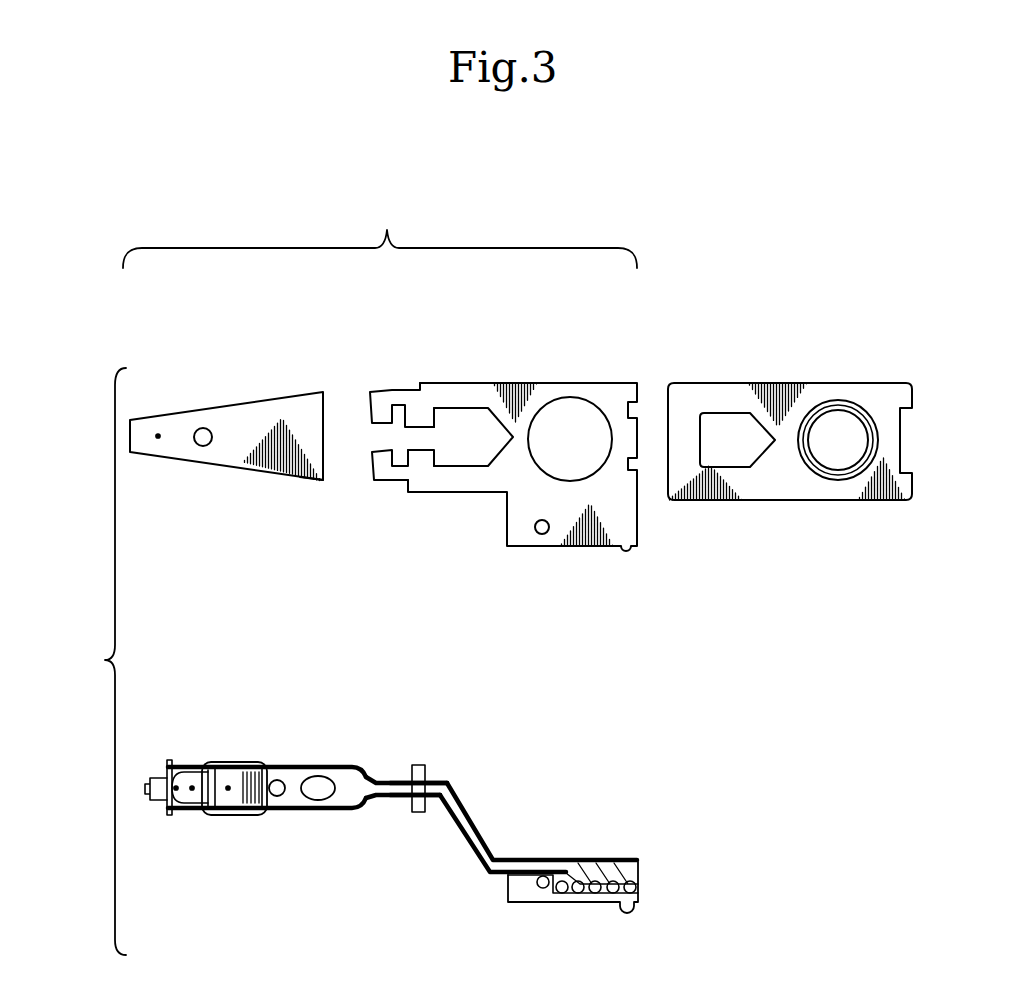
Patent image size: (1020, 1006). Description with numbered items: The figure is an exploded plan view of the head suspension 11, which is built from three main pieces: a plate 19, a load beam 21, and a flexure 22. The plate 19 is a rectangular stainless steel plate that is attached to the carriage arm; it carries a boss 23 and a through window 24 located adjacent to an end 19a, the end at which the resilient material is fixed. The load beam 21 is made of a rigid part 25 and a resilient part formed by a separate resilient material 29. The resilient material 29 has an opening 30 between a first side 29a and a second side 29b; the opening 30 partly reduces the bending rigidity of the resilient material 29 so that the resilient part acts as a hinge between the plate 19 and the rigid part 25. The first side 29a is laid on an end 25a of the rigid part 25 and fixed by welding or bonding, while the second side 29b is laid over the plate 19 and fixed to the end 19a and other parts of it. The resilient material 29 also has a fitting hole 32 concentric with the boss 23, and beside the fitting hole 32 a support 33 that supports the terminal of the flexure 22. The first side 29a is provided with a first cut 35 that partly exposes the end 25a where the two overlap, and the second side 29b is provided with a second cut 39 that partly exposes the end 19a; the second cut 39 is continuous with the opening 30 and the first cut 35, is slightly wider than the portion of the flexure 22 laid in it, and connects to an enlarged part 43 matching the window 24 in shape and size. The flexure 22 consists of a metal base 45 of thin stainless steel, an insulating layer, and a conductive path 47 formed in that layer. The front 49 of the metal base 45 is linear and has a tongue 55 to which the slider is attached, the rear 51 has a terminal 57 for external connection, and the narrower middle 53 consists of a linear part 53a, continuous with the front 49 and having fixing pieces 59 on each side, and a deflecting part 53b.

The head suspension 11 is at (91, 661).
The load beam 21 is at (380, 232).
The rigid part 25 is at (258, 386).
The end of the rigid part 25a is at (321, 482).
The first cut 35 is at (364, 433).
The resilient material 29 is at (527, 375).
The first side 29a is at (392, 468).
The second side 29b is at (467, 392).
The opening 30 is at (405, 470).
The fitting hole 32 is at (570, 398).
The second cut 39 is at (433, 437).
The enlarged part 43 is at (470, 467).
The support 33 is at (574, 548).
The plate 19 is at (780, 375).
The end of the plate 19a is at (676, 430).
The through window 24 is at (732, 418).
The boss 23 is at (844, 400).
The flexure 22 is at (392, 772).
The metal base 45 is at (257, 754).
The front 49 is at (223, 766).
The conductive path 47 is at (290, 811).
The tongue 55 is at (190, 806).
The middle 53 is at (447, 781).
The linear part 53a is at (389, 798).
The deflecting part 53b is at (481, 826).
The fixing pieces 59 is at (418, 765).
The rear 51 is at (618, 860).
The terminal 57 is at (585, 894).